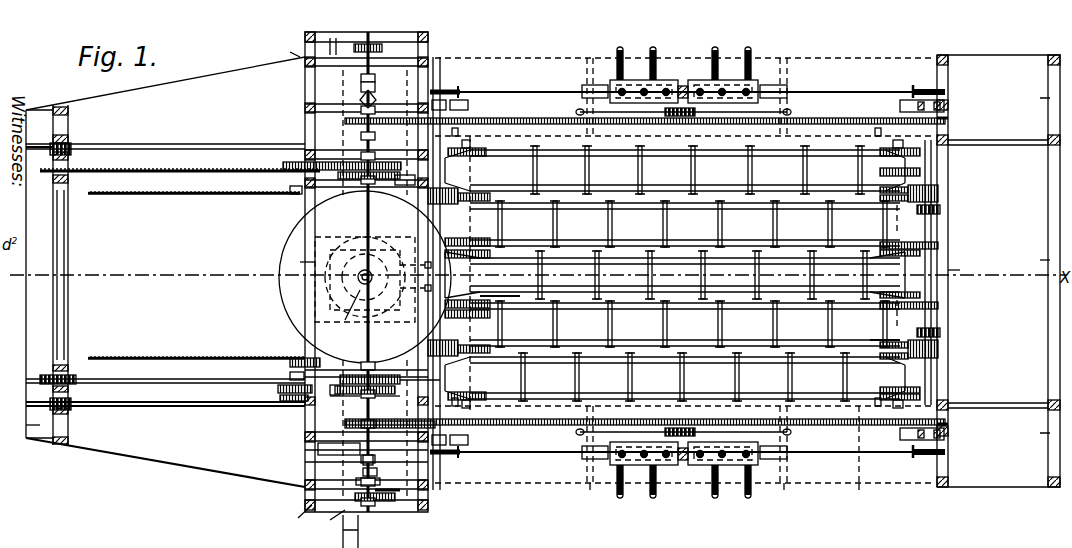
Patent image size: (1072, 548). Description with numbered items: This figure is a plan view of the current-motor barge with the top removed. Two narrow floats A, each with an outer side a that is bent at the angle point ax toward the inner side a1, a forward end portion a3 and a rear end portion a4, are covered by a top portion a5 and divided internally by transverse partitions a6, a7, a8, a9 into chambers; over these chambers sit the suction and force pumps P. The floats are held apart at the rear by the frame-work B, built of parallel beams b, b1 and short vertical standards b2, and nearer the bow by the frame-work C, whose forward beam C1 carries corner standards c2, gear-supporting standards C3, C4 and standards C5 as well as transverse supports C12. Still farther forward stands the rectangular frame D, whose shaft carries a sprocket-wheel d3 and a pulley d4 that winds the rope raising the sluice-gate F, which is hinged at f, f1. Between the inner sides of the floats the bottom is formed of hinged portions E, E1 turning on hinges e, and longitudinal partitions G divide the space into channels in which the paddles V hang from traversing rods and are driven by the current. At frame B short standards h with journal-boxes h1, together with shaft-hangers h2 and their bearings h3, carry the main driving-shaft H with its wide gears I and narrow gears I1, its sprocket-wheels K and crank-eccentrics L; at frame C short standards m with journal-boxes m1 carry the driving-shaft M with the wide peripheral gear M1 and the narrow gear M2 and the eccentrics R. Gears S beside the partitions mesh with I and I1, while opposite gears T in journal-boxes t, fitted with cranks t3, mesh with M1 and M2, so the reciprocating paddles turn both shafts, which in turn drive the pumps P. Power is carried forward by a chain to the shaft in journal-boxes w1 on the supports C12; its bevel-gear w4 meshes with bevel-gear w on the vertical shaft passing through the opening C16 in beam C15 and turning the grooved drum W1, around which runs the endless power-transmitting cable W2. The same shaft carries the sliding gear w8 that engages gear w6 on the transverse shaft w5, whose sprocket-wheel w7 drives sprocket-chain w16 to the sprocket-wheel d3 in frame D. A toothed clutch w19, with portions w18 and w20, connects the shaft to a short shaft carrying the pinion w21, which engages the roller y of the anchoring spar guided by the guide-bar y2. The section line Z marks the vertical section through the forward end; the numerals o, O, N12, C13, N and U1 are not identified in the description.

The float A is at (165, 272).
The angle point ax is at (287, 495).
The rectangular frame D is at (52, 185).
The pulley d4 is at (70, 148).
The sprocket-wheel d3 is at (50, 376).
The forward end portion a3 is at (26, 424).
The inner side a1 is at (287, 325).
The hinge f is at (180, 200).
The hinge f1 is at (290, 188).
The power-transmitting cable W2 is at (196, 344).
The sprocket-chain w16 is at (238, 369).
The sprocket-wheel w7 is at (278, 389).
The gear w6 is at (282, 400).
The sluice-gate F is at (170, 302).
The grooved wheel or drum W1 is at (282, 297).
The top portion a5 is at (247, 443).
The frame-work C is at (308, 448).
The section line Z is at (343, 36).
The wide peripheral gear M1 is at (408, 196).
The journal-box m1 is at (422, 100).
The worm rack o is at (349, 168).
The hub O is at (380, 200).
The beam C15 is at (363, 257).
The vertical shaft-opening C16 is at (365, 279).
The beam C1 is at (315, 425).
The lever N12 is at (420, 256).
The gear M2 is at (418, 295).
The bevel-gear w4 is at (340, 318).
The driving-shaft M is at (390, 361).
The gear C13 is at (361, 379).
The transverse shaft w5 is at (344, 398).
The sliding gear w8 is at (387, 398).
The gear-supporting standard C4 is at (305, 358).
The gear-supporting standard C3 is at (308, 378).
The bevel-gear w is at (345, 424).
The standard C5 is at (308, 484).
The support C12 is at (340, 455).
The clutch portion w18 is at (381, 453).
The toothed clutch w19 is at (384, 473).
The clutch portion w20 is at (358, 475).
The pinion w21 is at (390, 492).
The journal-box w1 is at (368, 502).
The roller y is at (342, 531).
The guide-bar y2 is at (322, 527).
The corner standard c2 is at (435, 518).
The eccentric R is at (687, 274).
The short standard m is at (468, 105).
The outer side a is at (500, 58).
The transverse partition a6 is at (487, 491).
The transverse partition a7 is at (589, 497).
The transverse partition a8 is at (785, 497).
The transverse partition a9 is at (857, 497).
The hinge e is at (666, 274).
The rack N is at (645, 272).
The suction and force pump P is at (684, 272).
The paddle V is at (686, 172).
The roller U1 is at (685, 274).
The hinged bottom portion E1 is at (678, 223).
The hinged bottom portion E is at (695, 323).
The gear S is at (496, 248).
The longitudinal partition G is at (690, 318).
The gear T is at (640, 267).
The crank t3 is at (468, 274).
The journal-box t is at (467, 276).
The main driving-shaft H is at (932, 370).
The gear I is at (940, 190).
The gear I1 is at (940, 246).
The shaft-hanger h2 is at (942, 210).
The journal-bearing h3 is at (907, 267).
The short vertical standard h is at (900, 106).
The journal-box h1 is at (922, 88).
The crank-eccentric L is at (946, 90).
The sprocket-wheel K is at (946, 112).
The frame-work B is at (998, 271).
The short vertical standard b2 is at (940, 55).
The rear end portion a4 is at (1036, 265).
The beam b is at (959, 270).
The beam b1 is at (1036, 258).